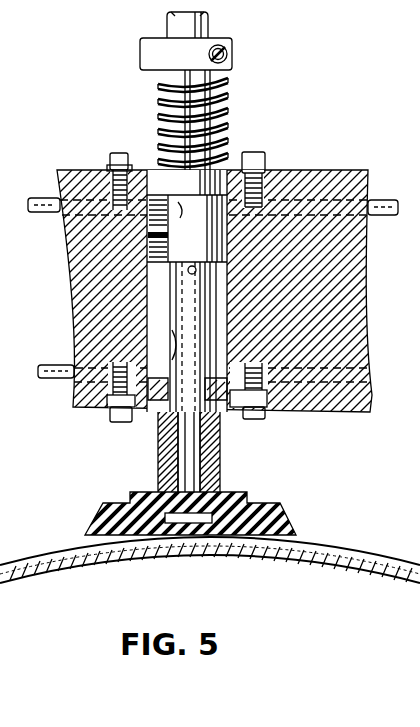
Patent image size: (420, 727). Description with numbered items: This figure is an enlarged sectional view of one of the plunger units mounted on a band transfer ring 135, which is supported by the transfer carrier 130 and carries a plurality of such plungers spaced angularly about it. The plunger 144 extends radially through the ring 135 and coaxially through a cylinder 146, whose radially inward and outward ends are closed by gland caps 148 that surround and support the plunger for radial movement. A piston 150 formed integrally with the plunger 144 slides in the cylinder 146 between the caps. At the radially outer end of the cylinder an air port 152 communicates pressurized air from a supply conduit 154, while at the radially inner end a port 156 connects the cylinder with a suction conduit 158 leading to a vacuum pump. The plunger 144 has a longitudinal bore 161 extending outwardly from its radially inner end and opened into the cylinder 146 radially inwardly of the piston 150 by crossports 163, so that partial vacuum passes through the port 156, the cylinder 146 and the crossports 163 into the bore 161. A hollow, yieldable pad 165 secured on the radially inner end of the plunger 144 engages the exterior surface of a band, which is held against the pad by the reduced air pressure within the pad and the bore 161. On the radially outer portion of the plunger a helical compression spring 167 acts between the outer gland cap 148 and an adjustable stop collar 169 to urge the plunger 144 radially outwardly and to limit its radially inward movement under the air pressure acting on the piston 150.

The transfer carrier 130 is at (292, 170).
The band transfer ring 135 is at (82, 185).
The plunger 144 is at (160, 440).
The cylinder 146 is at (155, 296).
The gland cap 148 is at (142, 166).
The piston 150 is at (147, 242).
The air port 152 is at (235, 163).
The supply conduit 154 is at (382, 200).
The port 156 is at (168, 350).
The suction conduit 158 is at (62, 378).
The longitudinal bore 161 is at (170, 326).
The crossport 163 is at (187, 268).
The pad 165 is at (273, 502).
The helical compression spring 167 is at (214, 101).
The stop collar 169 is at (152, 50).